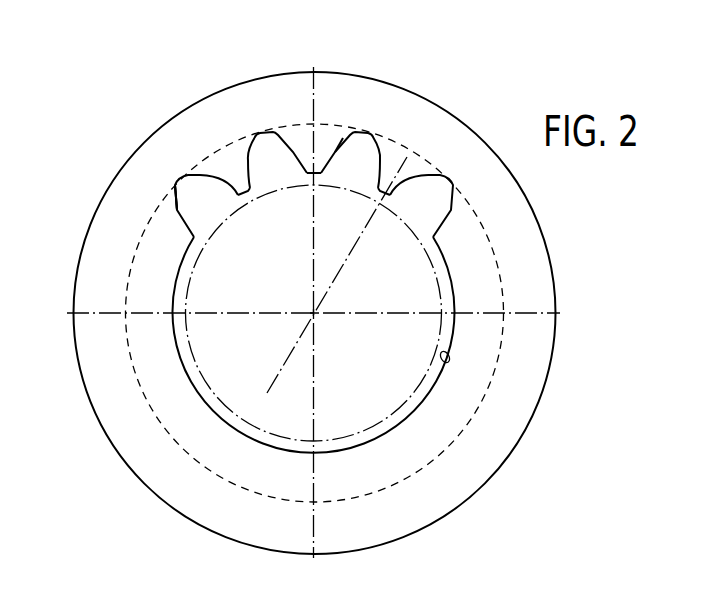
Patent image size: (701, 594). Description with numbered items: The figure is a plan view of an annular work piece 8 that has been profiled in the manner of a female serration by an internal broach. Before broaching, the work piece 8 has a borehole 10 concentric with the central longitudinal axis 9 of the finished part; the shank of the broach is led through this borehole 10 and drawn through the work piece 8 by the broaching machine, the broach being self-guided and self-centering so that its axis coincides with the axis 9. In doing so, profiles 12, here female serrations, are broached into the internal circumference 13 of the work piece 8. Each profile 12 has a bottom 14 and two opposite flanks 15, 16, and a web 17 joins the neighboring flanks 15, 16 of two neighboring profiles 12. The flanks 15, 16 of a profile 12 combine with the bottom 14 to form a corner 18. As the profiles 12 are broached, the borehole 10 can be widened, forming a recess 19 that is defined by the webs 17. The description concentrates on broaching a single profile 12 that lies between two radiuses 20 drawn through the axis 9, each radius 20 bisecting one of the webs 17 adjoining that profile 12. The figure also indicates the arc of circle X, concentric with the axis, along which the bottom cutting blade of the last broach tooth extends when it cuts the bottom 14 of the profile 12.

The work piece 8 is at (483, 123).
The arc of circle X is at (497, 267).
The central longitudinal axis 9 is at (312, 312).
The borehole 10 is at (373, 383).
The profiles 12 is at (267, 128).
The internal circumference 13 is at (418, 388).
The bottom 14 is at (175, 185).
The flank 15 is at (343, 138).
The flank 16 is at (198, 173).
The web 17 is at (243, 190).
The corner 18 is at (171, 188).
The recess 19 is at (447, 365).
The radiuses 20 is at (313, 253).